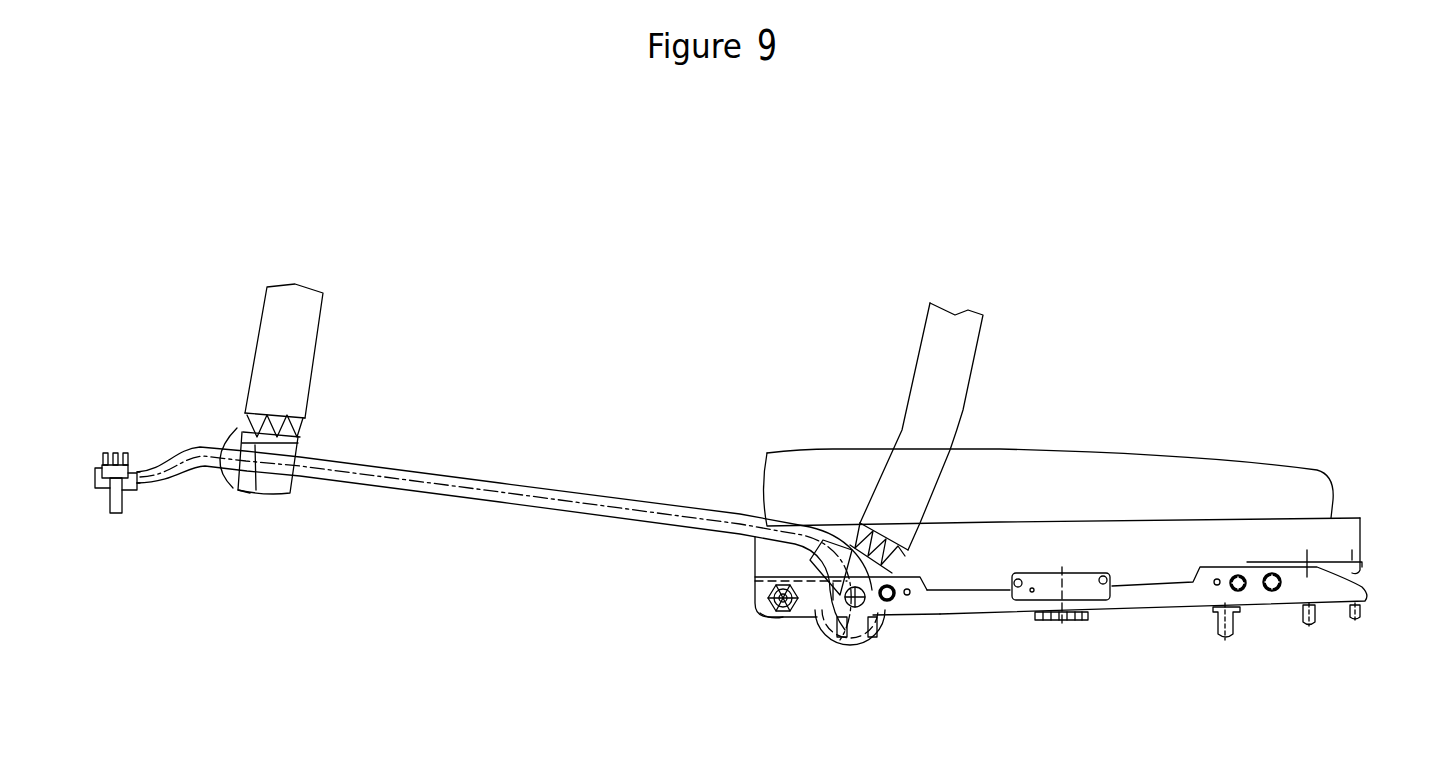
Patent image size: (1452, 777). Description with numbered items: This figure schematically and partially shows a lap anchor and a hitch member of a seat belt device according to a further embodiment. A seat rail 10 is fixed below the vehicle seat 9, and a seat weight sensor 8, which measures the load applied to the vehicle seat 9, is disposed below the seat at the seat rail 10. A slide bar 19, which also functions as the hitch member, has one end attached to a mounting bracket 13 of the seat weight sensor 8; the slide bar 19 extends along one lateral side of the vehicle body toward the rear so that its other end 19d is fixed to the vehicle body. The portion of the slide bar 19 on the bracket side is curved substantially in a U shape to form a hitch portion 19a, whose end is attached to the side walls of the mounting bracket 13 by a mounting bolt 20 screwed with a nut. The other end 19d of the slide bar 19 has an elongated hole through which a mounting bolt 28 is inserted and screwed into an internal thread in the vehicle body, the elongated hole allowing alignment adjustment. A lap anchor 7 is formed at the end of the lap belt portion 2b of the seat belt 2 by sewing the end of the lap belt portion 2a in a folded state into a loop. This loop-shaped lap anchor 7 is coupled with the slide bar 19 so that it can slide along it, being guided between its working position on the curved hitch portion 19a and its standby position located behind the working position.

The seat belt 2 is at (323, 327).
The lap belt portion 2a is at (893, 553).
The lap belt portion 2b is at (313, 377).
The lap anchor 7 is at (277, 493).
The seat weight sensor 8 is at (1080, 627).
The vehicle seat 9 is at (1192, 478).
The seat rail 10 is at (1313, 538).
The mounting bracket 13 is at (760, 613).
The slide bar 19 is at (587, 500).
The hitch portion 19a is at (850, 523).
The other end 19d is at (150, 484).
The mounting bolt 20 is at (783, 617).
The mounting bolt 28 is at (110, 453).